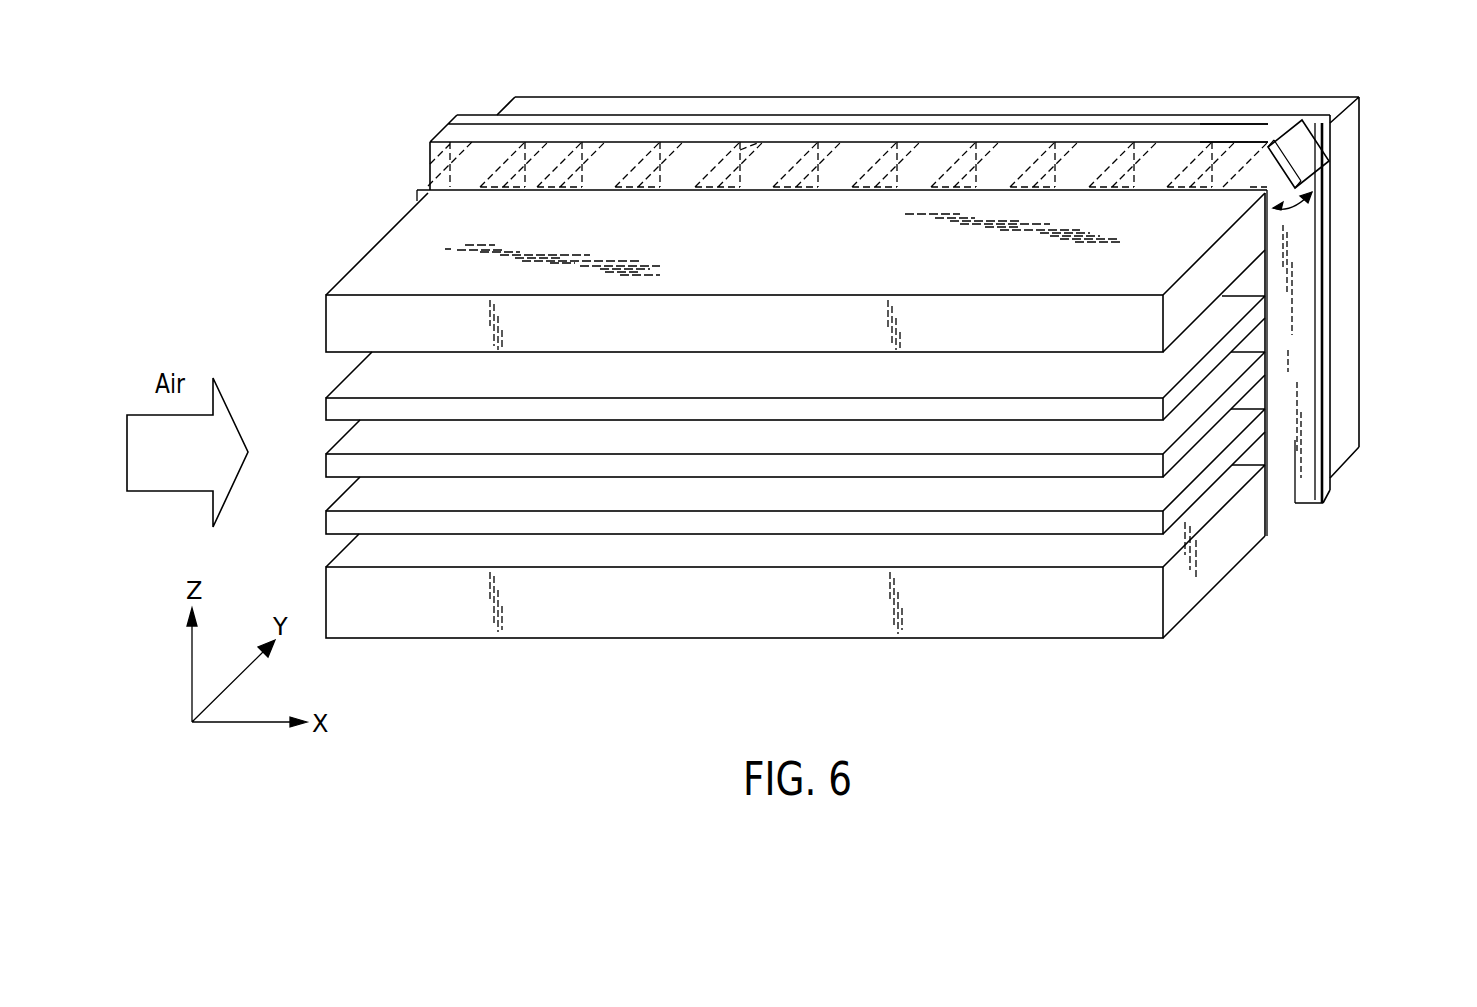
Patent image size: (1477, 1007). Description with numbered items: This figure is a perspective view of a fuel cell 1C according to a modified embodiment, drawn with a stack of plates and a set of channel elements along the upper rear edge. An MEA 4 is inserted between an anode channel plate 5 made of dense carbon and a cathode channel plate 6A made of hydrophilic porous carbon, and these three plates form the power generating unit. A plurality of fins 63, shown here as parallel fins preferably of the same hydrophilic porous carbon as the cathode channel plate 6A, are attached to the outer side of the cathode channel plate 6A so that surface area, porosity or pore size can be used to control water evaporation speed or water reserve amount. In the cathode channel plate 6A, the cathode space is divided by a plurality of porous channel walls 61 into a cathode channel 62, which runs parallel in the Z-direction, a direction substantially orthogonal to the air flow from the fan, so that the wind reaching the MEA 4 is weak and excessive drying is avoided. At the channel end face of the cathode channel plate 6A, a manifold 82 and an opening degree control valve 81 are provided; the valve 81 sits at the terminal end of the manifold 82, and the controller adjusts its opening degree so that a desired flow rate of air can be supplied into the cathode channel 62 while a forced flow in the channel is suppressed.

The fuel cell 1C is at (944, 287).
The MEA 4 is at (1325, 378).
The anode channel plate 5 is at (1352, 342).
The cathode channel plate 6A is at (1302, 418).
The channel walls 61 is at (797, 150).
The cathode channel 62 is at (673, 147).
The fins 63 is at (330, 522).
The opening degree control valve 81 is at (1300, 160).
The manifold 82 is at (1247, 130).